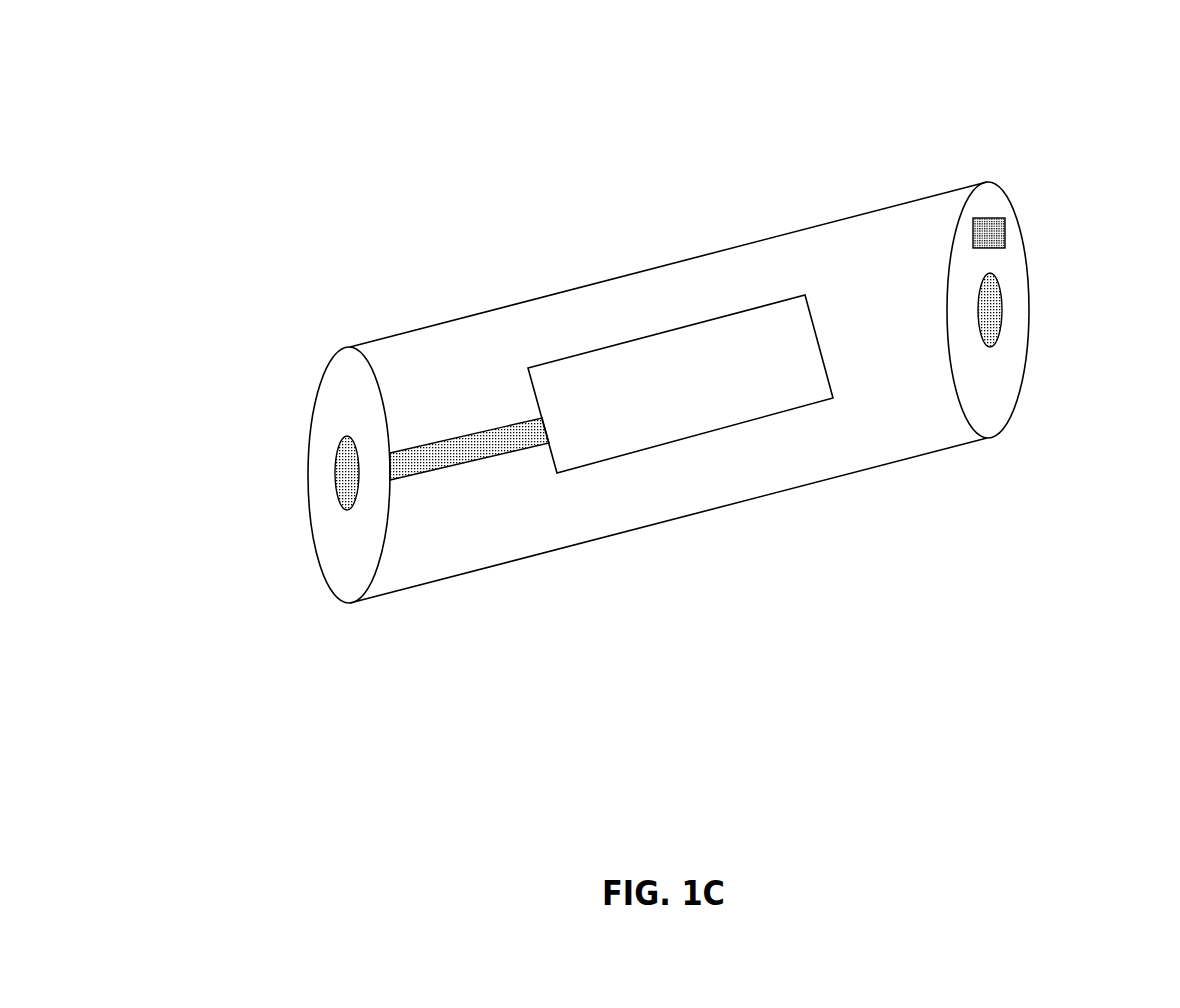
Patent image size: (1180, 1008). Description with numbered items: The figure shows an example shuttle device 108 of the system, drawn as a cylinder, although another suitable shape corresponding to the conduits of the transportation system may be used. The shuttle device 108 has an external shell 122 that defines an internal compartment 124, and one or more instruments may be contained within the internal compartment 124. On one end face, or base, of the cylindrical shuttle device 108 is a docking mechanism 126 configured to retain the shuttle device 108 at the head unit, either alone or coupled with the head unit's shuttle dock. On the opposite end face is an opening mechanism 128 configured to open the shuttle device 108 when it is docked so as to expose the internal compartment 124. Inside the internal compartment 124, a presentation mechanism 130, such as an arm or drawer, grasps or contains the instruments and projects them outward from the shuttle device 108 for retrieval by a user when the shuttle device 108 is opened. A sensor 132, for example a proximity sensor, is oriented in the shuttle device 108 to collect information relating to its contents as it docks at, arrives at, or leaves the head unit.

The shuttle device 108 is at (516, 67).
The external shell 122 is at (690, 258).
The internal compartment 124 is at (453, 548).
The docking mechanism 126 is at (993, 308).
The opening mechanism 128 is at (340, 476).
The presentation mechanism 130 is at (463, 447).
The sensor 132 is at (993, 232).